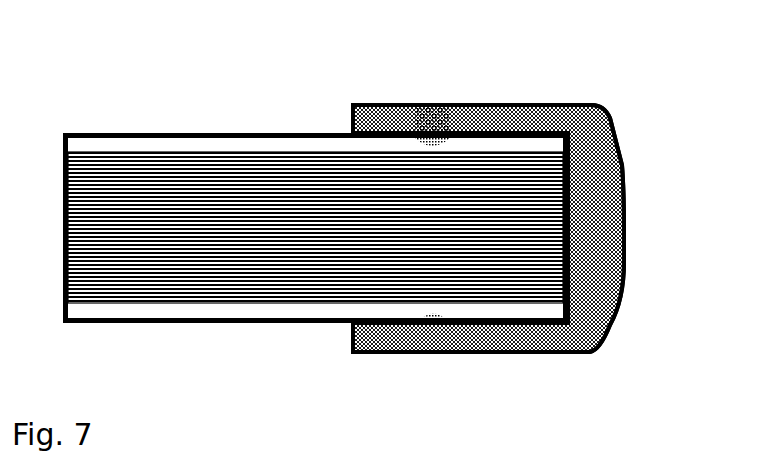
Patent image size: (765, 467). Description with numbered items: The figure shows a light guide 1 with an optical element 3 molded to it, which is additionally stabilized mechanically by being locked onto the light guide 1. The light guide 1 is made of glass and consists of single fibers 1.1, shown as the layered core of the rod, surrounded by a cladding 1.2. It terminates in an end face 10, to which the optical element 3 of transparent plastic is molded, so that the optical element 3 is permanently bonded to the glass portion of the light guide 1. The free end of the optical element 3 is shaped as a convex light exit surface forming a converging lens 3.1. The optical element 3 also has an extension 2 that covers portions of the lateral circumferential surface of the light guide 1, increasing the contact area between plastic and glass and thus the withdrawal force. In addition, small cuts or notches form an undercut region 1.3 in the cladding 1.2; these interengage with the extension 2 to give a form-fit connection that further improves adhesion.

The light guide 1 is at (316, 174).
The single fiber 1.1 is at (191, 150).
The cladding 1.2 is at (250, 145).
The undercut region 1.3 is at (442, 313).
The extension 2 is at (377, 125).
The optical element 3 is at (507, 189).
The converging lens 3.1 is at (622, 170).
The end face 10 is at (387, 189).